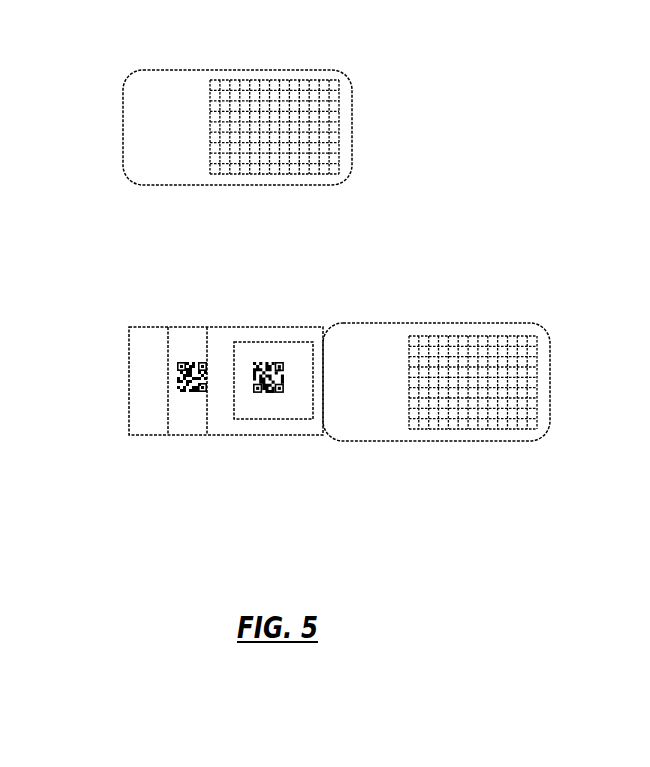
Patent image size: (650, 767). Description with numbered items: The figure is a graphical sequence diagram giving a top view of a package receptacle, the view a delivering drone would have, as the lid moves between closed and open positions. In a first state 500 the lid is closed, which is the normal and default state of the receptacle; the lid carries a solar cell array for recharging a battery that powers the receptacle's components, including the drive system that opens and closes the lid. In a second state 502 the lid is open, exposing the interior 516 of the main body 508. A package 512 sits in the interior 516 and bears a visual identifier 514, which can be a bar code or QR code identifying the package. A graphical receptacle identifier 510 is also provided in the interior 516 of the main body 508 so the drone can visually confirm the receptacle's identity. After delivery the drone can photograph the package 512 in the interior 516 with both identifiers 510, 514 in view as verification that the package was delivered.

The first state 500 is at (60, 60).
The second state 502 is at (40, 351).
The main body 508 is at (157, 435).
The graphical receptacle identifier 510 is at (192, 393).
The package 512 is at (267, 342).
The visual identifier 514 is at (267, 393).
The interior 516 is at (225, 343).